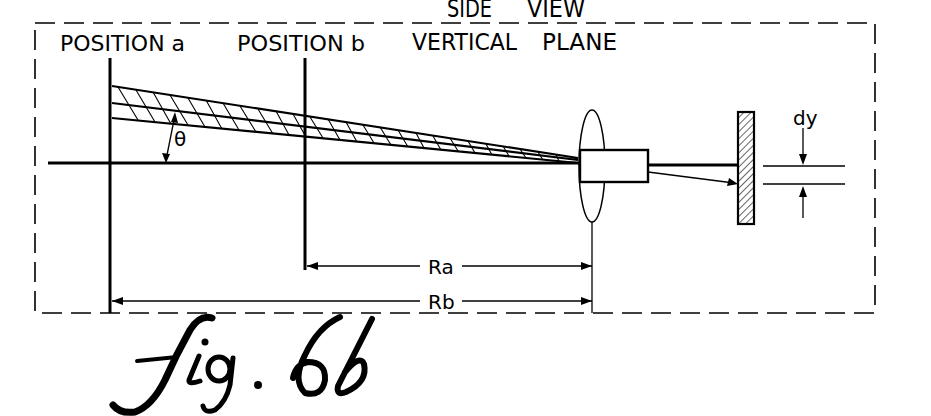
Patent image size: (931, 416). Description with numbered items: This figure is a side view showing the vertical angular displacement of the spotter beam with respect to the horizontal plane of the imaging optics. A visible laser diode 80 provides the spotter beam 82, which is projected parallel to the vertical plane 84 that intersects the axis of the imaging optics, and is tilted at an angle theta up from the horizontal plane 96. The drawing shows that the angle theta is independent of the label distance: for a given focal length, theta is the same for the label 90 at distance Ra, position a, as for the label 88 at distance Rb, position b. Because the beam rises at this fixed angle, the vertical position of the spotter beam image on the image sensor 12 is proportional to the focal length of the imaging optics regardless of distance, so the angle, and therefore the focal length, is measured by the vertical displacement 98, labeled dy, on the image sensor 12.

The image sensor 12 is at (738, 123).
The visible laser diode 80 is at (628, 148).
The spotter beam 82 is at (370, 125).
The vertical plane 84 is at (742, 313).
The label 88 is at (110, 266).
The label 90 is at (304, 180).
The horizontal plane 96 is at (79, 163).
The vertical displacement 98 is at (737, 184).